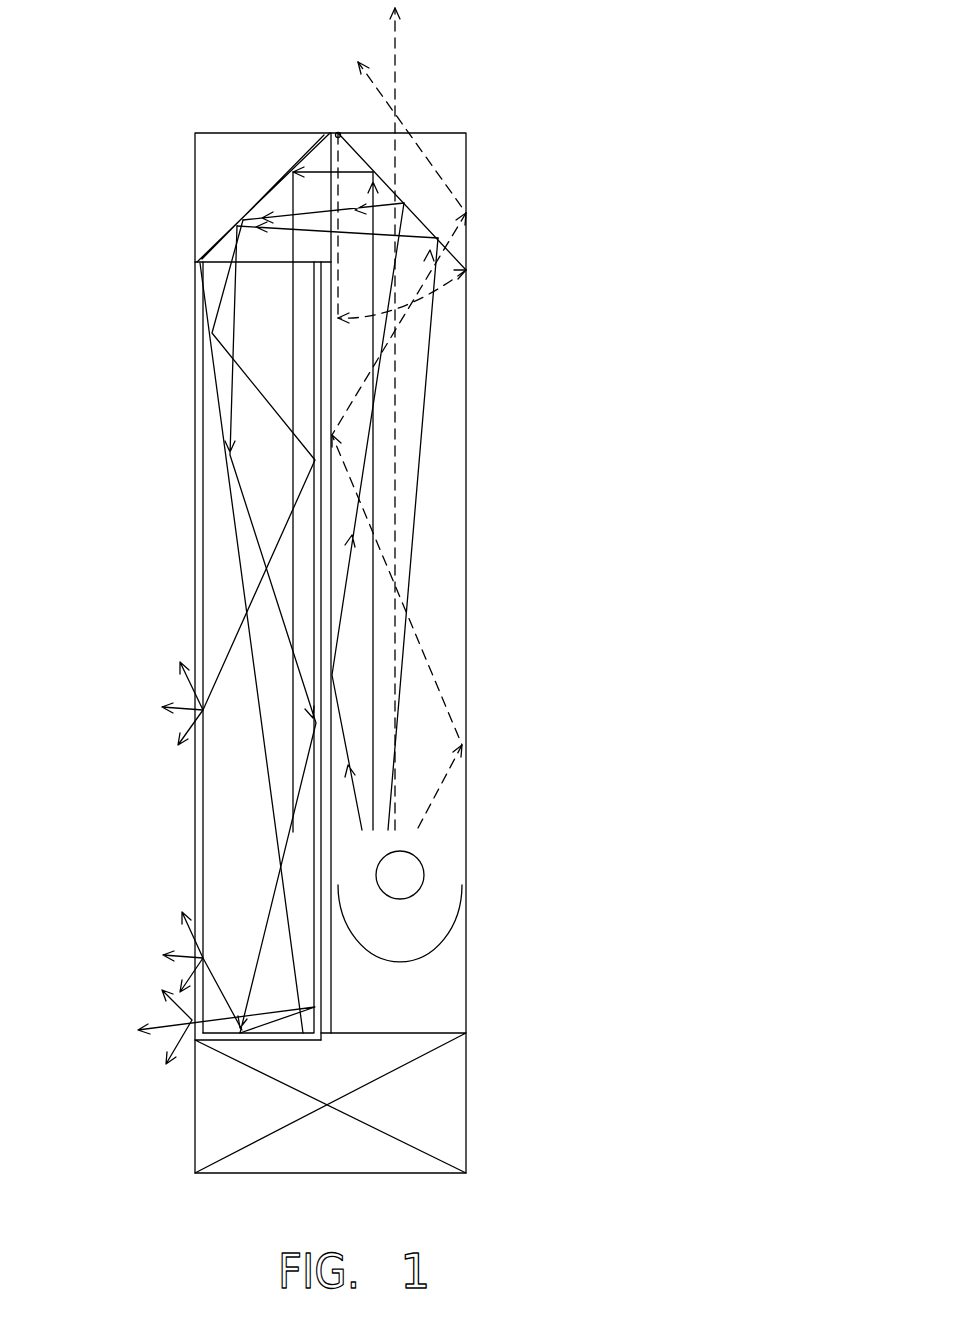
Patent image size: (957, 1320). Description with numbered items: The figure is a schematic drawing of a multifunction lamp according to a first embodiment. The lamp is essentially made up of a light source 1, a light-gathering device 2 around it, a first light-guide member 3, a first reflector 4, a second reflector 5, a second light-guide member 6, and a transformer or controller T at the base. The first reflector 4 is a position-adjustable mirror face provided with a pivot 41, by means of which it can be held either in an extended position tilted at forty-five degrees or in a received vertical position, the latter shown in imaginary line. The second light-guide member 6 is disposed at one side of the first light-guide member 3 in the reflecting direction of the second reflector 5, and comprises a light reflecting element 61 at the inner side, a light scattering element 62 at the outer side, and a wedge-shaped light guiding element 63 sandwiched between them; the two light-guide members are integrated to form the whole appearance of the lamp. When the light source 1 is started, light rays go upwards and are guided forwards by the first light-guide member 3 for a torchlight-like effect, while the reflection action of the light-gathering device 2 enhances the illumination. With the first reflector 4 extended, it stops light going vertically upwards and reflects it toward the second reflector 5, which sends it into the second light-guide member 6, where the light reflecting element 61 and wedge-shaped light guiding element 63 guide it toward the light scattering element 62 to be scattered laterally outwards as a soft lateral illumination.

The light source 1 is at (412, 867).
The light-gathering device 2 is at (442, 945).
The first light-guide member 3 is at (445, 540).
The first reflector 4 is at (323, 157).
The pivot 41 is at (338, 132).
The second reflector 5 is at (218, 243).
The second light-guide member 6 is at (205, 586).
The light reflecting element 61 is at (325, 787).
The light scattering element 62 is at (198, 617).
The wedge-shaped light guiding element 63 is at (265, 751).
The transformer or controller T is at (427, 1100).